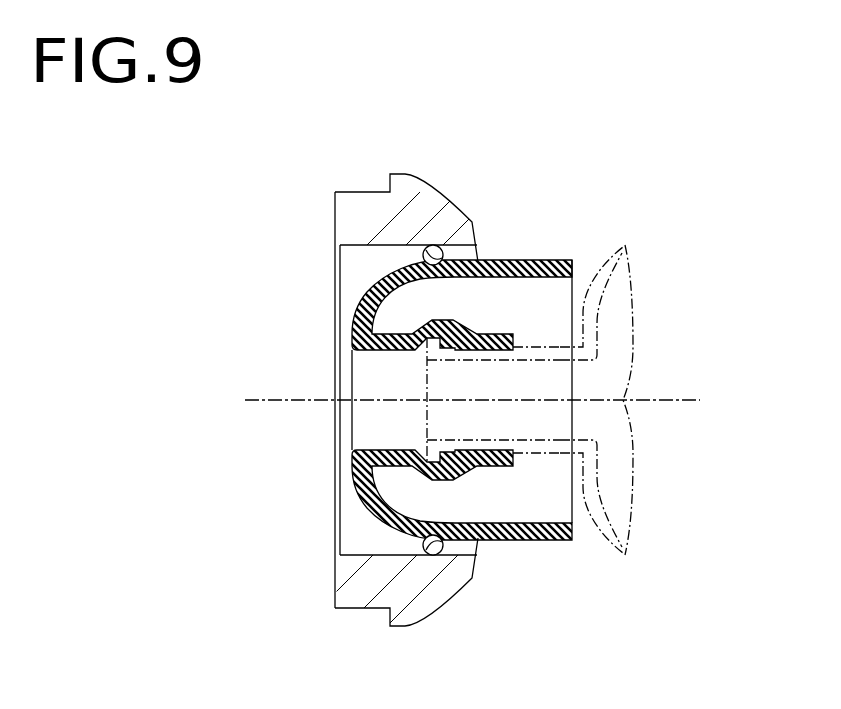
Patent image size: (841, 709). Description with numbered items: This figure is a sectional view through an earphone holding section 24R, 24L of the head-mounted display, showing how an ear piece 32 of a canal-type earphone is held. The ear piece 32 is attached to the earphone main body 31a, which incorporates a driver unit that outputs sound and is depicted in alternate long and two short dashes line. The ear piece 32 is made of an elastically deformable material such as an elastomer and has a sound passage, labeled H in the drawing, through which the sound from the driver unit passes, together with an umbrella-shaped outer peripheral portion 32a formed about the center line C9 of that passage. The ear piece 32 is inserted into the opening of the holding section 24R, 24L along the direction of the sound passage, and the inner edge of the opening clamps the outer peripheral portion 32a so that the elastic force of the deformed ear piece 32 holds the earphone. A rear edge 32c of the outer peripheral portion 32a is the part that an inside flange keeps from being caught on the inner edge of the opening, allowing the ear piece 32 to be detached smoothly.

The left earphone holding section 24L is at (411, 364).
The right earphone holding section 24R is at (425, 177).
The ear piece 32 is at (448, 407).
The outer peripheral portion 32a is at (528, 542).
The rear edge 32c is at (573, 269).
The main body 31a is at (620, 549).
The center line C9 is at (490, 401).
The clearance H is at (492, 413).